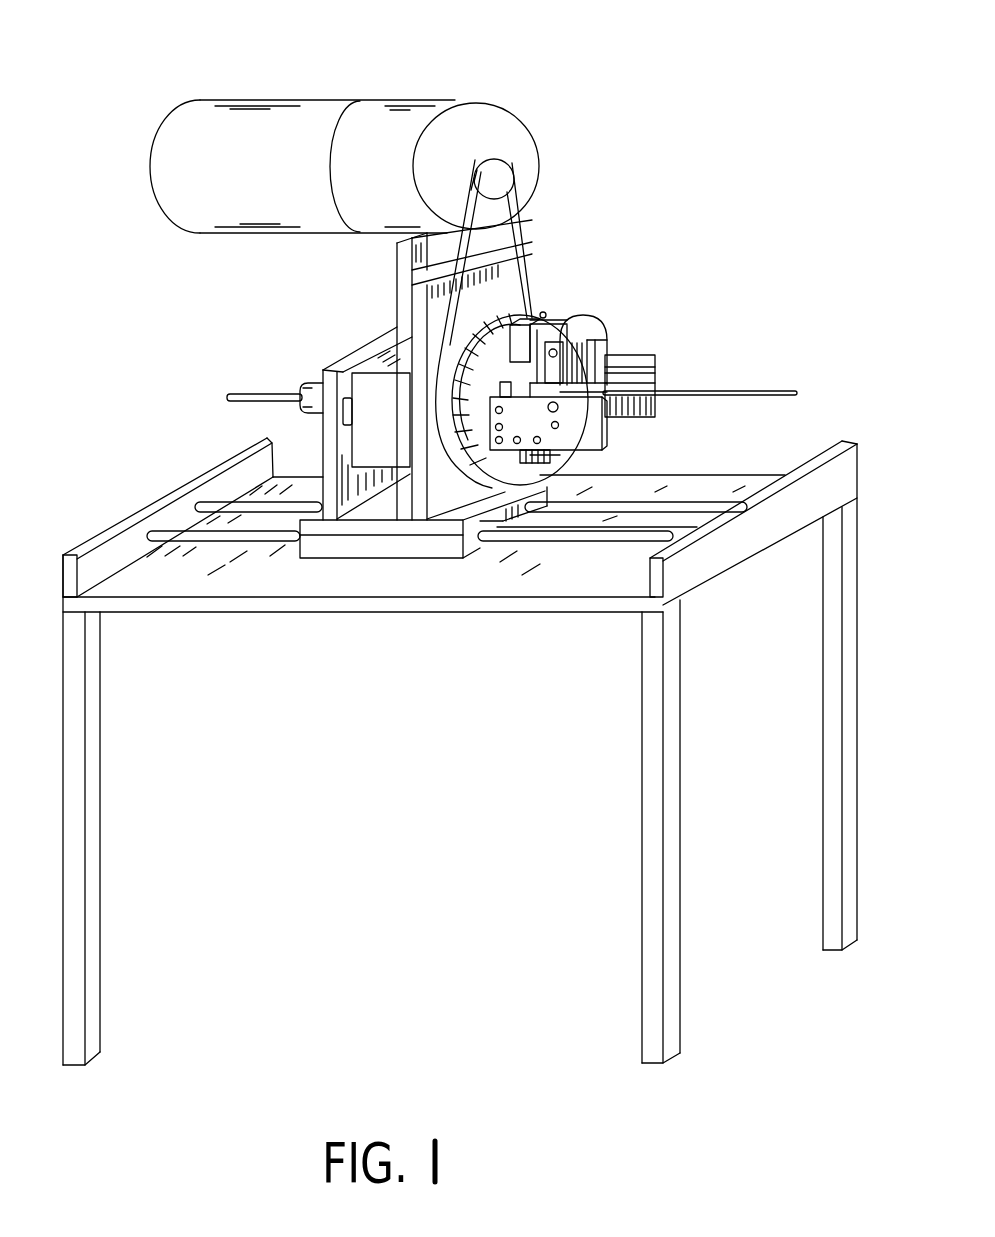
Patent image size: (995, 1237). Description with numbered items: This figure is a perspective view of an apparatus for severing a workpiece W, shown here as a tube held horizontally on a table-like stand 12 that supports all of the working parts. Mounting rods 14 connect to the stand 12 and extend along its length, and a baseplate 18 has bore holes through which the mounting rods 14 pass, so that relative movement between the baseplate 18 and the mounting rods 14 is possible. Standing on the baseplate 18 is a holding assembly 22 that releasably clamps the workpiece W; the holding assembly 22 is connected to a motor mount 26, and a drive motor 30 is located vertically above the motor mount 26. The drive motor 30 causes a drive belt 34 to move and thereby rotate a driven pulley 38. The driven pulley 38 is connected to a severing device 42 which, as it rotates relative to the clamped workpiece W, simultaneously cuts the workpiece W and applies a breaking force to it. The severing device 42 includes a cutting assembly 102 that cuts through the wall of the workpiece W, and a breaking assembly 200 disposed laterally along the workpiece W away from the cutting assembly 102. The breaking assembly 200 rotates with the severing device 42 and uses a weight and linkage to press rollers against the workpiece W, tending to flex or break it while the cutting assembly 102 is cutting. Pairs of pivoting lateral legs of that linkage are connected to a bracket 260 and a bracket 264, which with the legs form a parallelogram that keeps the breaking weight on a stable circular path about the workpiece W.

The stand 12 is at (77, 802).
The mounting rods 14 is at (213, 504).
The baseplate 18 is at (360, 547).
The holding assembly 22 is at (320, 340).
The workpiece W is at (242, 394).
The motor mount 26 is at (505, 263).
The drive motor 30 is at (440, 112).
The drive belt 34 is at (465, 205).
The driven pulley 38 is at (437, 522).
The cutting assembly 102 is at (553, 307).
The breaking assembly 200 is at (612, 316).
The severing device 42 is at (655, 338).
The bracket 264 is at (656, 410).
The bracket 260 is at (590, 452).